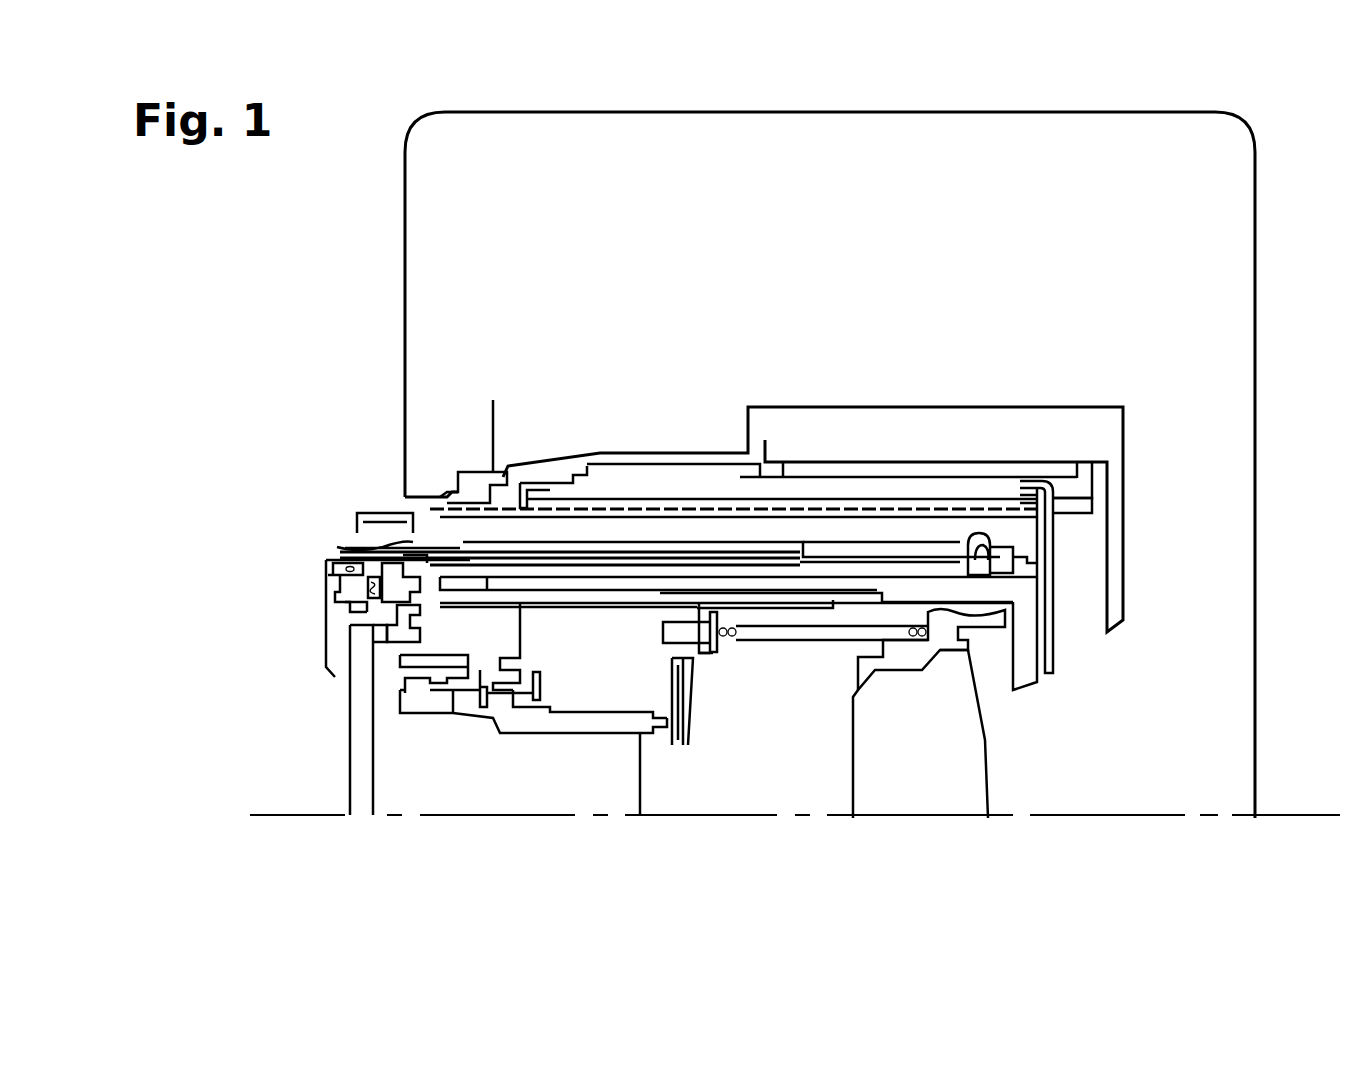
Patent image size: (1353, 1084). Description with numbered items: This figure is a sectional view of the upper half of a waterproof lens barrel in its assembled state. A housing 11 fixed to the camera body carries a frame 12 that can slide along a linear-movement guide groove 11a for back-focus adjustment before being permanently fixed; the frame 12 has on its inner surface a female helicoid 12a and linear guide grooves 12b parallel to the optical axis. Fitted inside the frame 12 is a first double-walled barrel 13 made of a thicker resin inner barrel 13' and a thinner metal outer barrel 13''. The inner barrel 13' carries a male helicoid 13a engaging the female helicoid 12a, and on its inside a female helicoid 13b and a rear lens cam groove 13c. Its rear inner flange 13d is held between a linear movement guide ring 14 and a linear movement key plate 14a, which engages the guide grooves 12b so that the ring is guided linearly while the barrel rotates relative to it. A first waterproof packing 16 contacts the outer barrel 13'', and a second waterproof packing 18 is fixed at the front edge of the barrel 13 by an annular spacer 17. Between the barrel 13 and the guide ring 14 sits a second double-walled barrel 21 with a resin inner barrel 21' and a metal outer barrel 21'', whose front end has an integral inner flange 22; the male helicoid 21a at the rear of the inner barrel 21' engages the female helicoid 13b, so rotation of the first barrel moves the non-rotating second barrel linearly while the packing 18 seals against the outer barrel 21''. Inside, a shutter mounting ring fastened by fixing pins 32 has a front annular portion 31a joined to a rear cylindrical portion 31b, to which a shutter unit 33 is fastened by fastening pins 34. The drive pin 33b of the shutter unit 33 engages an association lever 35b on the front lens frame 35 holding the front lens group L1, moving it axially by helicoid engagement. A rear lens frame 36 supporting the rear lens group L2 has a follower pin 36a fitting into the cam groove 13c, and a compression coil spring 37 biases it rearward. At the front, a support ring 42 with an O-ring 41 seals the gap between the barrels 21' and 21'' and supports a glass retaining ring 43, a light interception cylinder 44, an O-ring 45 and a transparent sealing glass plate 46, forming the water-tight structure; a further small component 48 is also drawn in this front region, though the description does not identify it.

The housing 11 is at (1053, 440).
The linear-movement guide groove 11a is at (997, 472).
The frame 12 is at (680, 530).
The female helicoid 12a is at (847, 507).
The linear guide grooves 12b is at (1080, 475).
The first double-walled moveable barrel 13 is at (565, 337).
The first inner barrel 13' is at (570, 466).
The first outer barrel 13'' is at (731, 462).
The male helicoid 13a is at (960, 500).
The female helicoid 13b is at (913, 550).
The rear lens cam groove 13c is at (1027, 592).
The inner flange 13d is at (1013, 573).
The linear movement guide ring 14 is at (1027, 595).
The linear movement key plate 14a is at (1055, 527).
The first annular waterproof packing 16 is at (420, 496).
The annular spacer 17 is at (390, 547).
The second annular waterproof packing 18 is at (360, 550).
The second double-walled barrel 21 is at (321, 365).
The second inner barrel 21' is at (351, 475).
The second outer barrel 21'' is at (401, 495).
The male helicoid 21a is at (812, 530).
The integral inner flange 22 is at (340, 567).
The front annular portion 31a is at (380, 692).
The rear annular cylindrical portion 31b is at (752, 617).
The fixing pins 32 is at (378, 702).
The shutter unit 33 is at (660, 702).
The drive pin 33b is at (535, 662).
The fastening pins 34 is at (698, 655).
The front lens frame 35 is at (515, 732).
The association lever 35b is at (535, 724).
The rear lens frame 36 is at (922, 655).
The follower pin 36a is at (1023, 577).
The backlash-eliminating compression coil spring 37 is at (842, 632).
The O-ring 41 is at (330, 582).
The support ring 42 is at (340, 602).
The glass retaining ring 43 is at (400, 640).
The light interception cylinder 44 is at (430, 762).
The O-ring 45 is at (355, 722).
The transparent sealing glass plate 46 is at (360, 807).
The spring 48 is at (370, 612).
The front lens group L1 is at (545, 798).
The rear lens group L2 is at (950, 799).